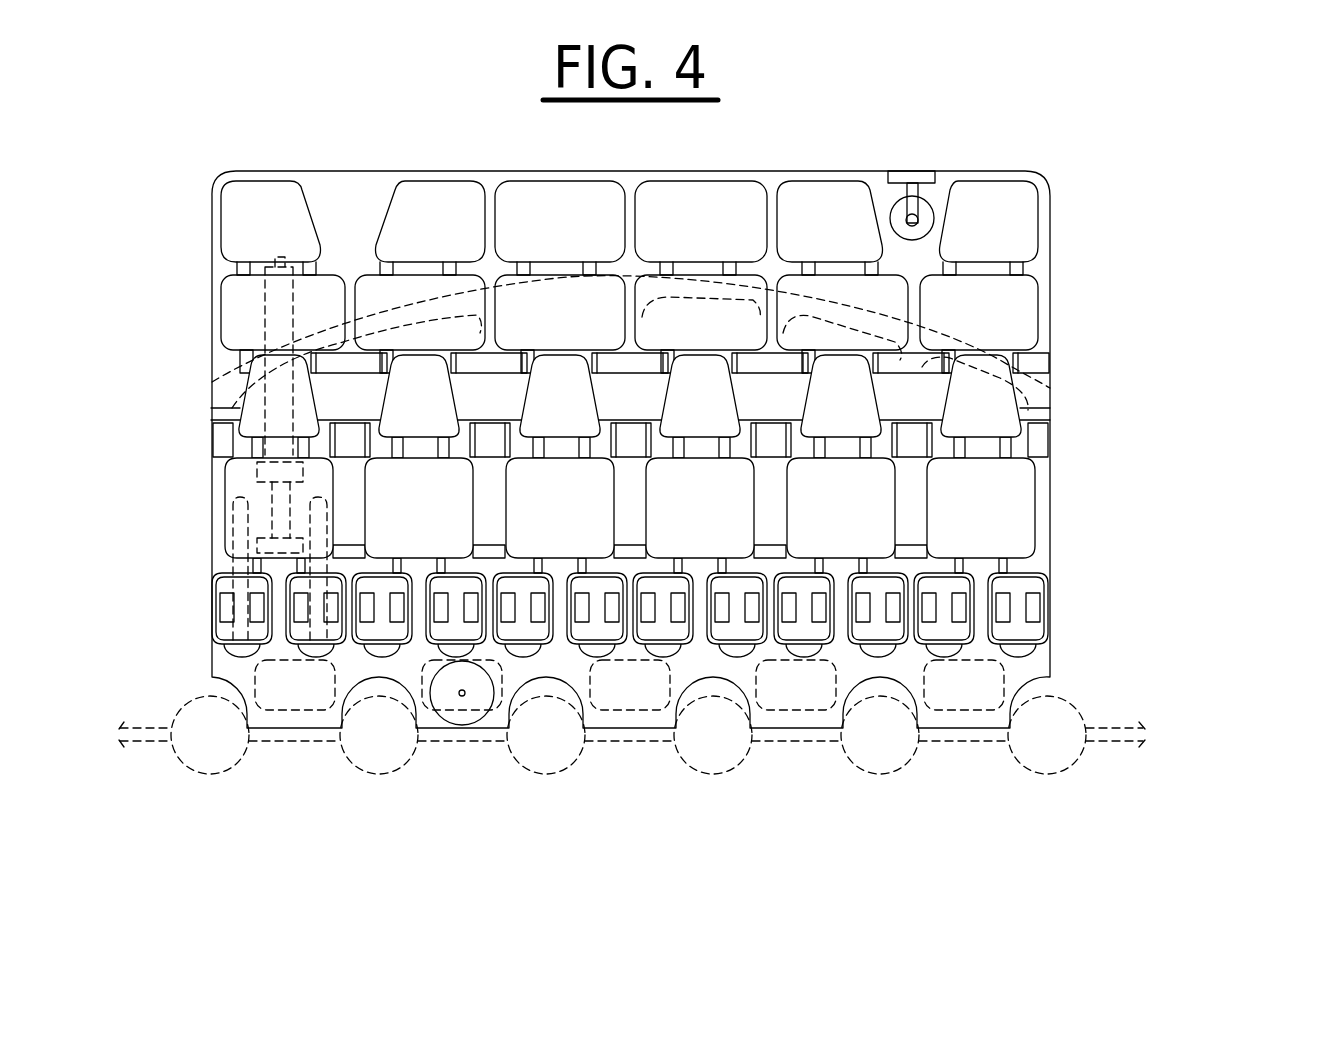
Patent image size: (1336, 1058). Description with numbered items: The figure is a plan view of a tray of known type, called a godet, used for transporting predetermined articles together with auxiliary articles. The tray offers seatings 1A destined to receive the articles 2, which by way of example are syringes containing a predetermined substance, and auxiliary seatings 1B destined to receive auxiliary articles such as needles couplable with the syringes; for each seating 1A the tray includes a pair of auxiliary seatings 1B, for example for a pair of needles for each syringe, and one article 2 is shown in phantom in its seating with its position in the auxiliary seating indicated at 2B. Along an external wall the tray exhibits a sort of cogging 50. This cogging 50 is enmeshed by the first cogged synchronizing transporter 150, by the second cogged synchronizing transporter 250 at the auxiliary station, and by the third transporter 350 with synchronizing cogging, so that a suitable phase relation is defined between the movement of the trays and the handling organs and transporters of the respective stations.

The seating 1A is at (253, 408).
The auxiliary seating 1B is at (218, 580).
The article 2 is at (260, 477).
The terminal receiving cell for component 2B is at (316, 628).
The cogging 50 is at (490, 712).
The first cogged synchronizing transporter 150 is at (724, 795).
The second cogged synchronizing transporter 250 is at (632, 735).
The third transporter 350 is at (1047, 787).